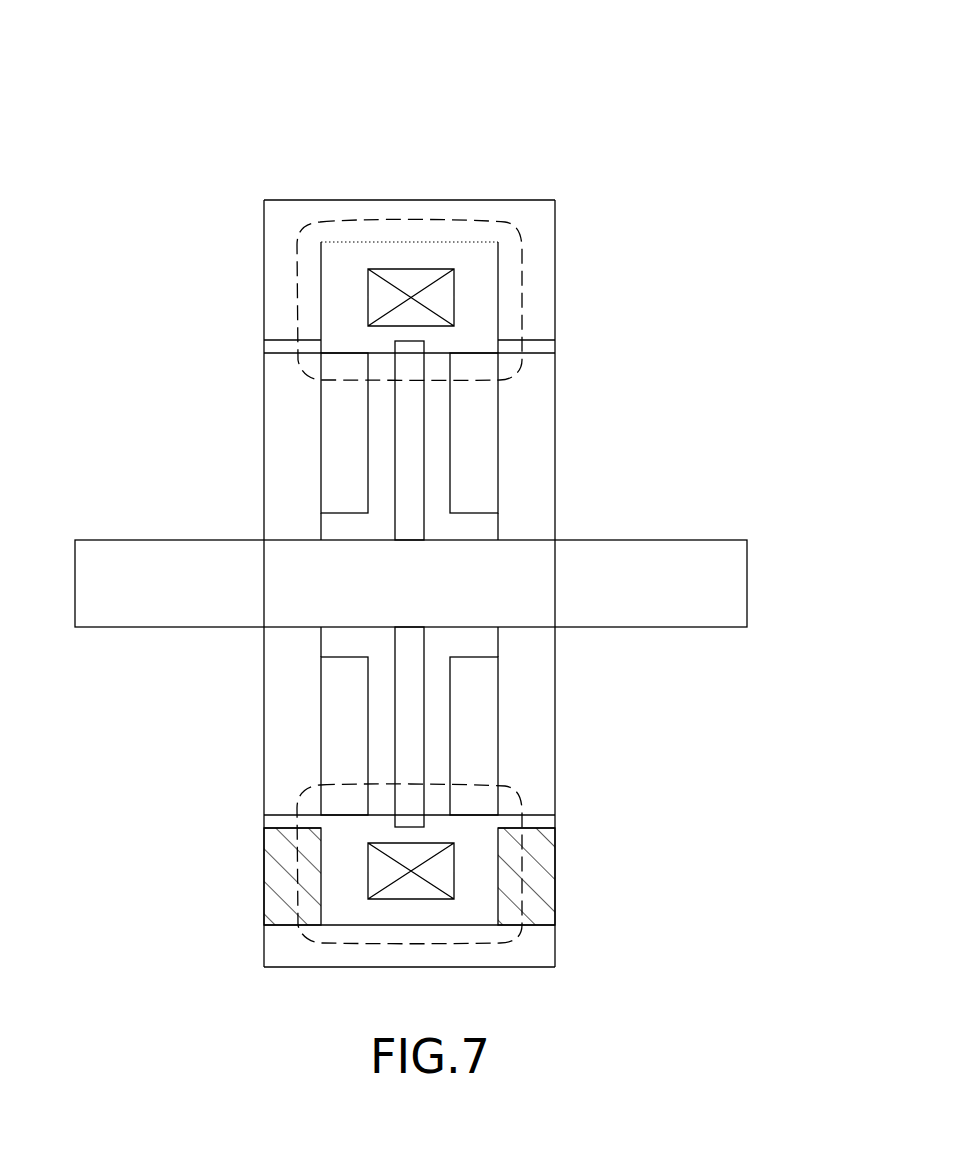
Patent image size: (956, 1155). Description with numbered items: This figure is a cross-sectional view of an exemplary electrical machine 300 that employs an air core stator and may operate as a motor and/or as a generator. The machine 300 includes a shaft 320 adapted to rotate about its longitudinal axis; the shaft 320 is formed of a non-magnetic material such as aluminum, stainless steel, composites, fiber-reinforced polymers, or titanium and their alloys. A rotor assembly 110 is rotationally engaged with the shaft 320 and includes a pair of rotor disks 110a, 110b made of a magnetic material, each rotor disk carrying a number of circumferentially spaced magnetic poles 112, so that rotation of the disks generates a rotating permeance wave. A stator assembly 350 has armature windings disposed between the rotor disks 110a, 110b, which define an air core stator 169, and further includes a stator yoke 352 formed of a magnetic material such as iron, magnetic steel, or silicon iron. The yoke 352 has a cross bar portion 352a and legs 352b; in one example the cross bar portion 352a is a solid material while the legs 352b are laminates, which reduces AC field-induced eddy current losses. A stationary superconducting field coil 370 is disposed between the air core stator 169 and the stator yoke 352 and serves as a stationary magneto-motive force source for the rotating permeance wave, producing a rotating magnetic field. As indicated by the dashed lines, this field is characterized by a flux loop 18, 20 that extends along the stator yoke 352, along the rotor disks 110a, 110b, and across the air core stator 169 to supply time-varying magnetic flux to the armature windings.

The electrical machine 300 is at (665, 175).
The stator assembly 350 is at (397, 170).
The stator yoke 352 is at (166, 172).
The cross bar portion 352a is at (297, 950).
The legs 352b is at (280, 873).
The flux loop 18 is at (522, 313).
The flux loop 20 is at (512, 805).
The rotor assembly 110 is at (564, 388).
The rotor disk 110a is at (292, 400).
The rotor disk 110b is at (532, 458).
The magnetic poles 112 is at (348, 486).
The air core stator 169 is at (405, 655).
The shaft 320 is at (690, 568).
The stationary superconducting field coil 370 is at (441, 877).